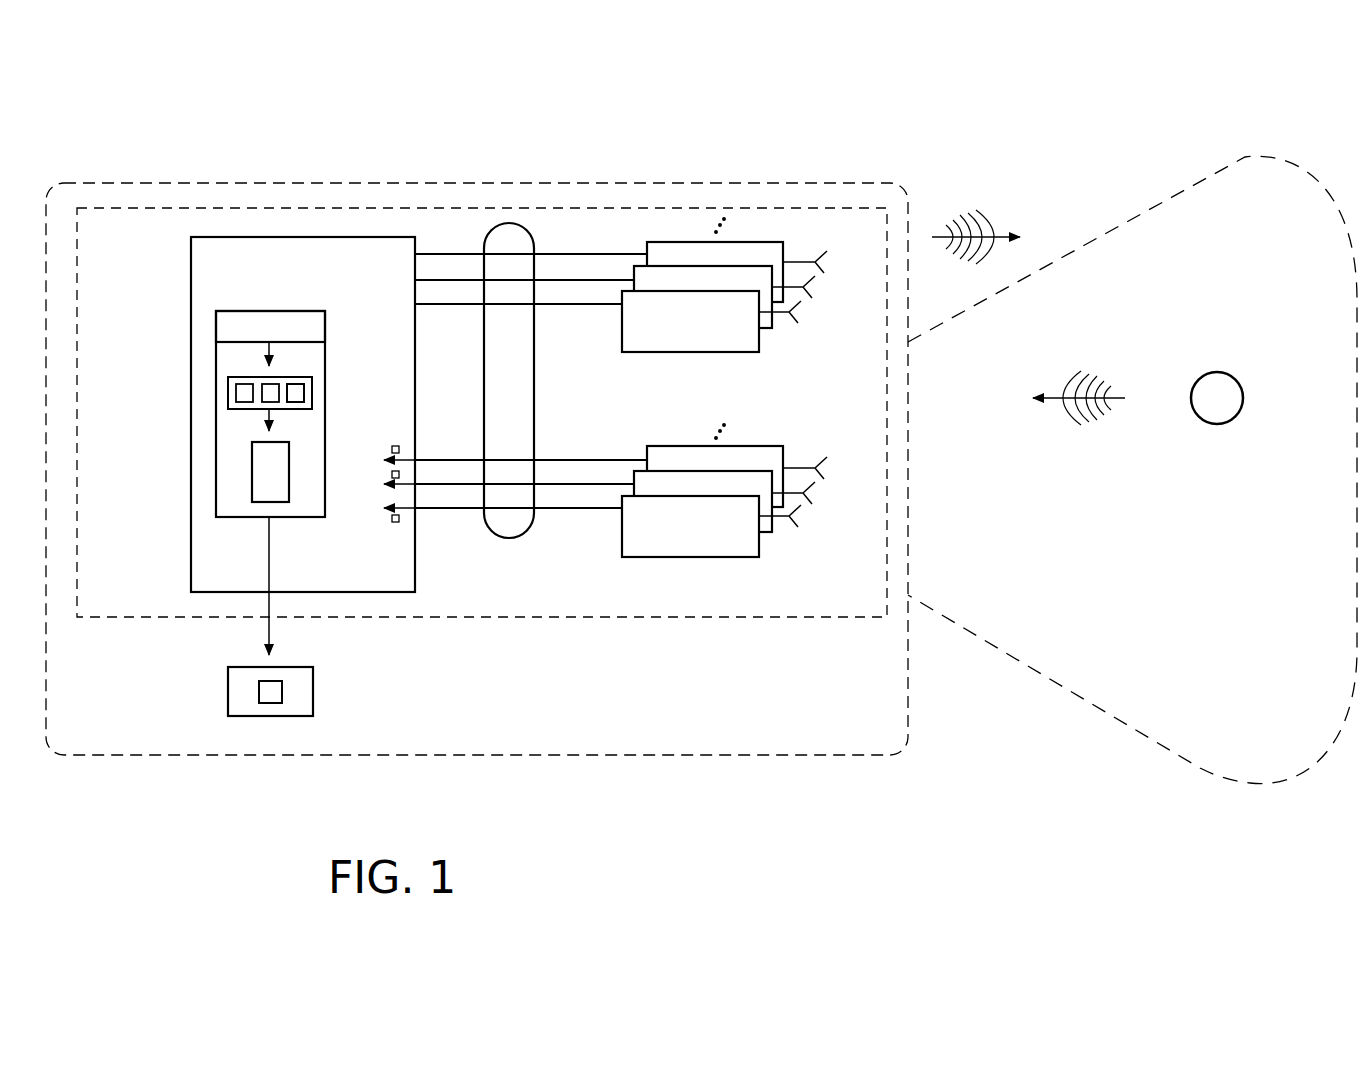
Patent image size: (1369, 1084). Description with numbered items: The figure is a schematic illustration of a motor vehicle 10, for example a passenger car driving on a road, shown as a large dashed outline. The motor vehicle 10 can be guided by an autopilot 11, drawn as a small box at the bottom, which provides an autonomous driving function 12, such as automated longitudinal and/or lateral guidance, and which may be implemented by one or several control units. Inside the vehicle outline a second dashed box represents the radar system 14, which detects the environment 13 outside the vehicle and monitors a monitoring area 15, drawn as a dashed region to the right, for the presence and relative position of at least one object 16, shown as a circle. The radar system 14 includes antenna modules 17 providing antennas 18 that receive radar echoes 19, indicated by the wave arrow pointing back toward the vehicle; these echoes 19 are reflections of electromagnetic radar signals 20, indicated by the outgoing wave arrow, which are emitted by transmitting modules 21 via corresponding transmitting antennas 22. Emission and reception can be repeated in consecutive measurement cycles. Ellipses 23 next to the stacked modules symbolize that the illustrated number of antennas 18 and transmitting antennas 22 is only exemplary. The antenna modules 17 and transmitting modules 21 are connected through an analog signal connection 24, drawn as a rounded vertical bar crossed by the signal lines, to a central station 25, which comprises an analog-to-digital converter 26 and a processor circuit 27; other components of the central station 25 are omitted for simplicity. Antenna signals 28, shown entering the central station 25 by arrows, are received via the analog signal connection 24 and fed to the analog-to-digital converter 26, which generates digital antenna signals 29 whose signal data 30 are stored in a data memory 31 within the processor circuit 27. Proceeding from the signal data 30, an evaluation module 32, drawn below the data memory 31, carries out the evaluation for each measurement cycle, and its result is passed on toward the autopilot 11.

The motor vehicle 10 is at (171, 183).
The autopilot 11 is at (313, 692).
The autonomous driving function 12 is at (264, 692).
The environment 13 is at (1167, 518).
The radar system 14 is at (285, 208).
The monitoring area 15 is at (1148, 198).
The object 16 is at (1213, 372).
The antenna modules 17 is at (720, 496).
The antennas 18 is at (805, 517).
The radar echoes 19 is at (1118, 397).
The radar signals 20 is at (942, 236).
The transmitting modules 21 is at (720, 291).
The transmitting antennas 22 is at (805, 313).
The ellipses 23 is at (716, 216).
The analog signal connection 24 is at (505, 223).
The central station 25 is at (355, 237).
The analog-to-digital converter 26 is at (270, 311).
The processor circuit 27 is at (232, 517).
The antenna signals 28 is at (400, 449).
The digital antenna signals 29 is at (263, 393).
The signal data 30 is at (302, 393).
The data memory 31 is at (228, 400).
The evaluation module 32 is at (282, 502).